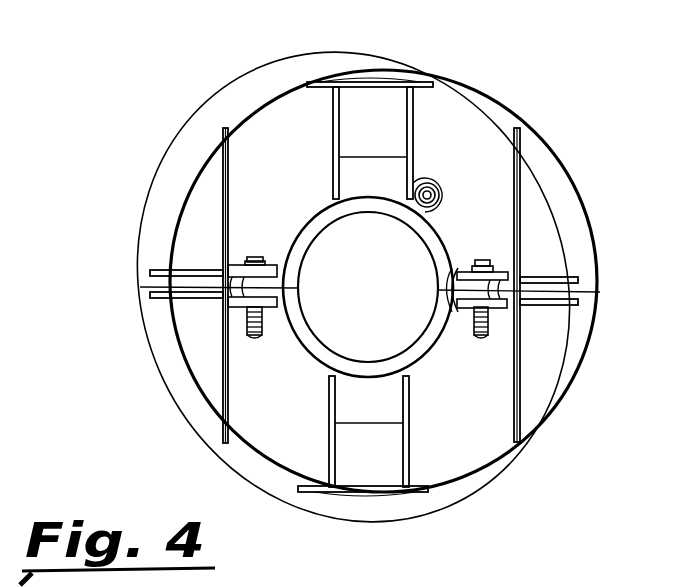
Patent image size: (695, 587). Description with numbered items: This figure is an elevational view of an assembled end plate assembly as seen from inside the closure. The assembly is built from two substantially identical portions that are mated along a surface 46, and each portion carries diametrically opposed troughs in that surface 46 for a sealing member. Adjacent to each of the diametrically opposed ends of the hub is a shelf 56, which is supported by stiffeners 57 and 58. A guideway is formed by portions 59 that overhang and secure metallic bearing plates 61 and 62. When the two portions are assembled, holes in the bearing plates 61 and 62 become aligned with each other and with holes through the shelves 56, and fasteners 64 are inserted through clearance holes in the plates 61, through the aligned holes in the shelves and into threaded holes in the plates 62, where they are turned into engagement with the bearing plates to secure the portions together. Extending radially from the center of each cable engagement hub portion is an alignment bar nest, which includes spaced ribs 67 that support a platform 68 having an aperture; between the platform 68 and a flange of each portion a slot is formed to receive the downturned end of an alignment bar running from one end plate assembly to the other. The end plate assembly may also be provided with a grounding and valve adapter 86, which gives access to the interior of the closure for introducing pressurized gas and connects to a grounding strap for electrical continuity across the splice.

The surface 46 is at (151, 284).
The shelf 56 is at (488, 284).
The stiffener 57 is at (551, 273).
The stiffener 58 is at (522, 176).
The overhanging portion 59 is at (500, 262).
The bearing plate 61 is at (224, 271).
The bearing plate 62 is at (244, 299).
The fastener 64 is at (256, 257).
The rib 67 is at (420, 117).
The platform 68 is at (383, 83).
The grounding and valve adapter 86 is at (428, 186).